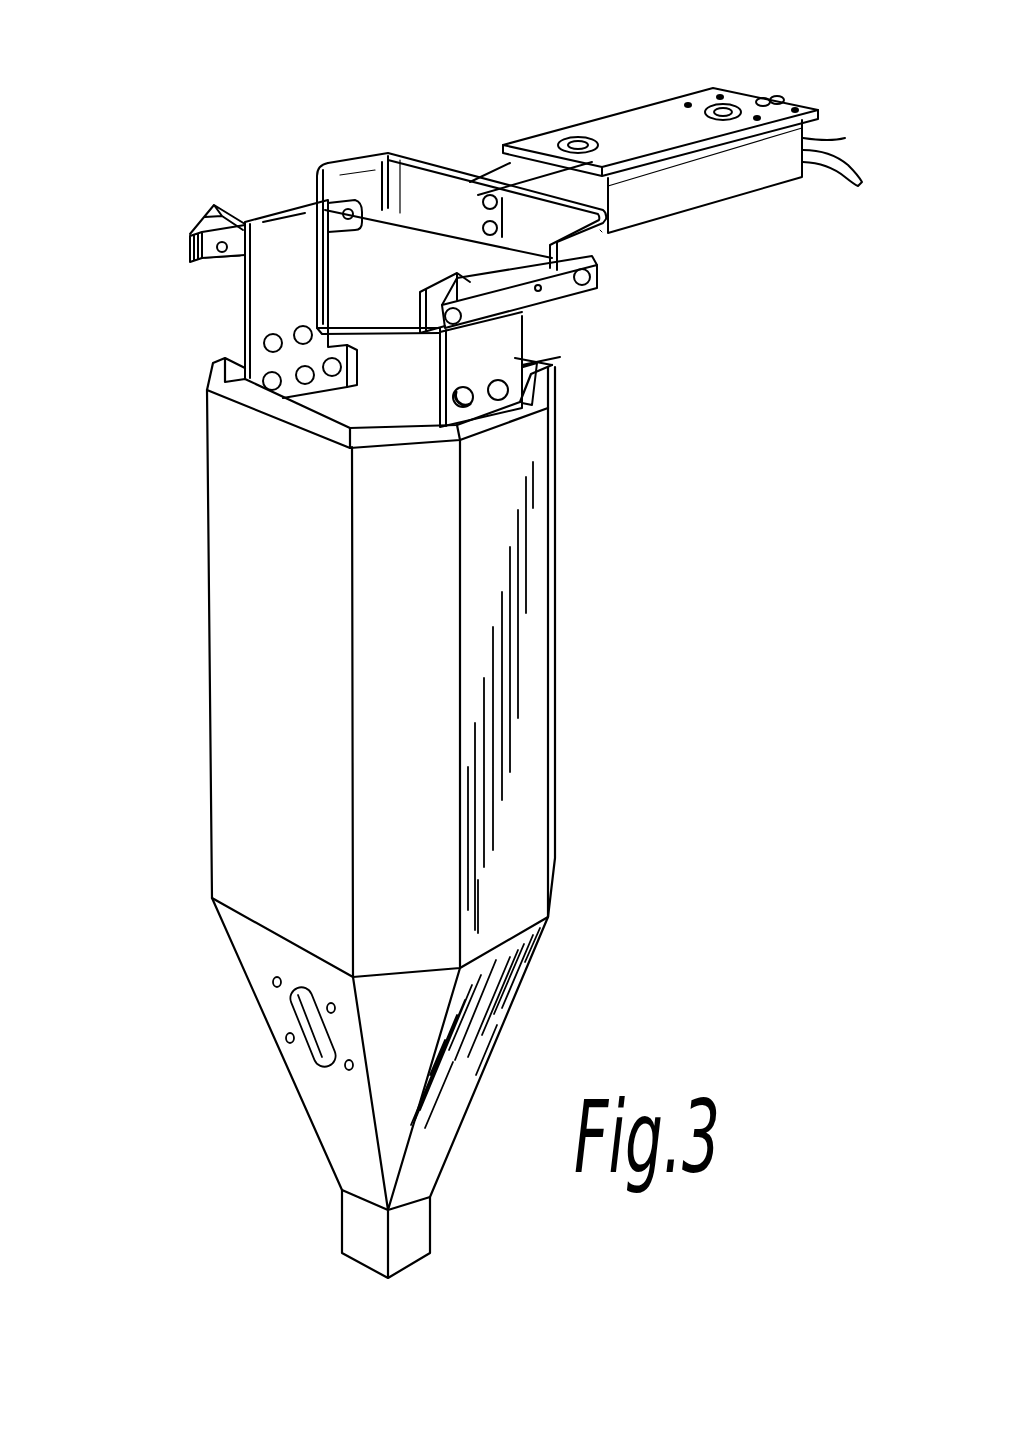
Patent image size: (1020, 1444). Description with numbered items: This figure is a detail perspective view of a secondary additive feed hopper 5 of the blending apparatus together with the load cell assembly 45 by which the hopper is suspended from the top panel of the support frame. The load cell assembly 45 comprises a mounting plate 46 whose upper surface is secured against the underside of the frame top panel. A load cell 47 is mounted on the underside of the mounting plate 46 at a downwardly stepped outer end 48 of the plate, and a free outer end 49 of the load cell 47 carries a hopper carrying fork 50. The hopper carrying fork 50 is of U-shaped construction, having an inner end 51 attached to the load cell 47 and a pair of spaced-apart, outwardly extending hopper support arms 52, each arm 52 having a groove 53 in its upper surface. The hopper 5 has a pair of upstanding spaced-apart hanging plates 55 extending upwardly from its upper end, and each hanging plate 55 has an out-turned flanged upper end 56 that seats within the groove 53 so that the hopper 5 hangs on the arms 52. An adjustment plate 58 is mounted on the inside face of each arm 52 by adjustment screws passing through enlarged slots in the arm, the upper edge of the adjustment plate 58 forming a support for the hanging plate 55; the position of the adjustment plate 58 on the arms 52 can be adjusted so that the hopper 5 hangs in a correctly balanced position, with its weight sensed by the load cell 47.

The secondary additive feed hopper 5 is at (527, 608).
The load cell assembly 45 is at (660, 263).
The mounting plate 46 is at (632, 130).
The load cell 47 is at (744, 178).
The downwardly stepped outer end 48 is at (807, 128).
The free outer end 49 is at (512, 167).
The hopper carrying fork 50 is at (360, 147).
The inner end 51 is at (417, 190).
The hopper support arm 52 is at (190, 230).
The groove 53 is at (247, 190).
The hanging plate 55 is at (257, 278).
The out-turned flanged upper end 56 is at (282, 193).
The adjustment plate 58 is at (217, 262).